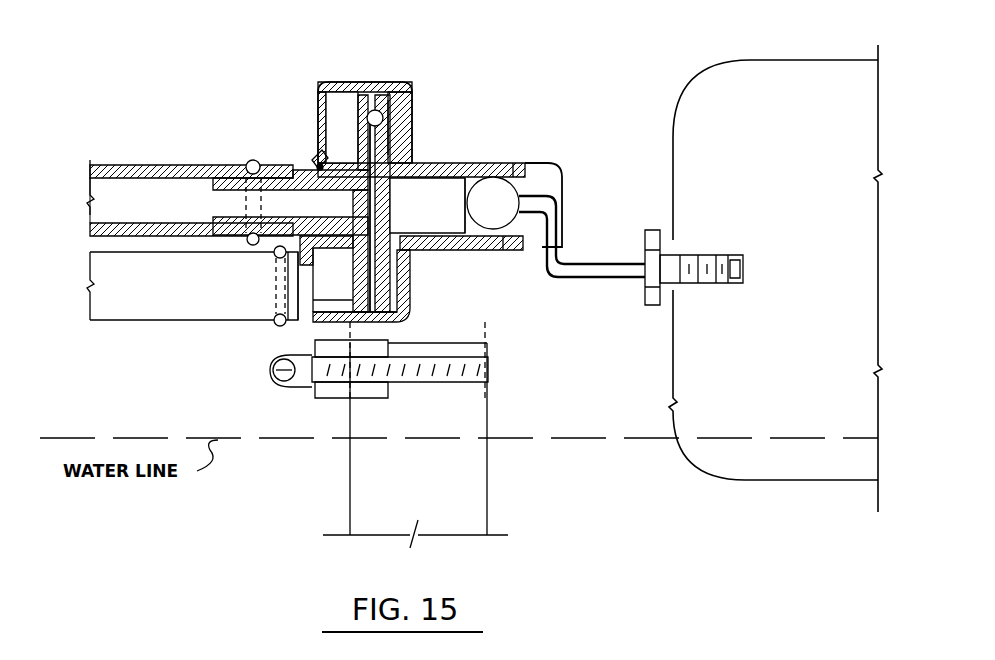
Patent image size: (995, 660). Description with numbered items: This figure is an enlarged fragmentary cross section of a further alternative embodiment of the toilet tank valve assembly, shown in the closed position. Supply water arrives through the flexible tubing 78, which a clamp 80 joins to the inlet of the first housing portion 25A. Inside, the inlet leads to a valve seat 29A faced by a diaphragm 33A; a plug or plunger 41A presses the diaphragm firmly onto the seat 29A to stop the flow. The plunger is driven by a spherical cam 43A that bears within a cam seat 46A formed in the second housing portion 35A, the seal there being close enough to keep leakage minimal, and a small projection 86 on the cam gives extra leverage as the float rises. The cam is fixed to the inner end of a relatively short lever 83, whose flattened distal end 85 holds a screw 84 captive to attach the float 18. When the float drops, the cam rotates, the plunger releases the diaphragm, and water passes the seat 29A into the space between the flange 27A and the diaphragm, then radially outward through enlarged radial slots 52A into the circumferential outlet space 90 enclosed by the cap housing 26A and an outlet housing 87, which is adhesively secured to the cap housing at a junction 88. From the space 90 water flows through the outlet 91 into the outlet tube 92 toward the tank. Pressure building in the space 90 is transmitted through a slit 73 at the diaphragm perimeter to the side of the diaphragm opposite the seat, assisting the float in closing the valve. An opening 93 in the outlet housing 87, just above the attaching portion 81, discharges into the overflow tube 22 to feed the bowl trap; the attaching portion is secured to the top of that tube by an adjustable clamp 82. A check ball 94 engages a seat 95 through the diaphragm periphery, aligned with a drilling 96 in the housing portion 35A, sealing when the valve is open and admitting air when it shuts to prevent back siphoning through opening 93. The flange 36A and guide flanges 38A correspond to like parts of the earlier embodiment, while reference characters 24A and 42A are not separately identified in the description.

The float 18 is at (673, 410).
The overflow tube 22 is at (488, 478).
The valve body 24A is at (440, 150).
The first housing portion 25A is at (316, 160).
The cap housing 26A is at (437, 254).
The flange 27A is at (318, 150).
The valve seat 29A is at (368, 196).
The diaphragm 33A is at (455, 205).
The second housing portion 35A is at (498, 163).
The bottom wall 36A is at (398, 306).
The housing 38A is at (566, 195).
The plug or plunger 41A is at (519, 198).
The lower flange 42A is at (468, 250).
The spherical cam 43A is at (535, 172).
The cam seat 46A is at (515, 250).
The radial slots 52A is at (354, 298).
The slit 73 is at (398, 336).
The tubing 78 is at (155, 166).
The clamp 80 is at (252, 160).
The attaching portion 81 is at (330, 396).
The adjustable clamp 82 is at (489, 367).
The lever 83 is at (622, 264).
The screw 84 is at (654, 303).
The flattened distal end 85 is at (742, 270).
The projection 86 is at (480, 183).
The outlet housing 87 is at (322, 84).
The junction 88 is at (395, 92).
The outlet space 90 is at (345, 100).
The outlet 91 is at (298, 322).
The outlet tube 92 is at (155, 318).
The opening 93 is at (351, 345).
The check ball 94 is at (370, 122).
The seat 95 is at (400, 118).
The drilling 96 is at (385, 118).